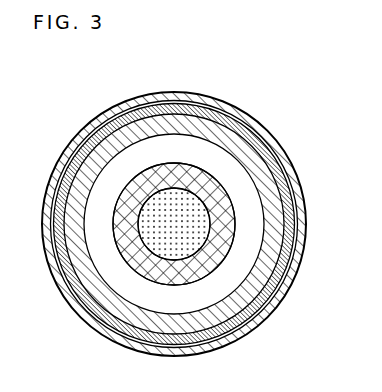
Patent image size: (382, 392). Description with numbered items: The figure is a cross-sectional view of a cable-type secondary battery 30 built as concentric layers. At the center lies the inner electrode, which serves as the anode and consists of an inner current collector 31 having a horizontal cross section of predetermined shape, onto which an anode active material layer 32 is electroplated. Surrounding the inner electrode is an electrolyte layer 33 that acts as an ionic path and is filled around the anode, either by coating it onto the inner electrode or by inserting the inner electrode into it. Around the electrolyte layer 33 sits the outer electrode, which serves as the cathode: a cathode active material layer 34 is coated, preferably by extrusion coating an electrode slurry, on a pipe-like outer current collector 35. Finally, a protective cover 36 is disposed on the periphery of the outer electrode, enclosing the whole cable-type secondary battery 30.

The cable-type secondary battery 30 is at (78, 115).
The inner current collector 31 is at (170, 204).
The anode active material layer 32 is at (182, 176).
The electrolyte layer 33 is at (292, 167).
The cathode active material layer 34 is at (250, 191).
The outer current collector 35 is at (307, 219).
The protective cover 36 is at (298, 244).